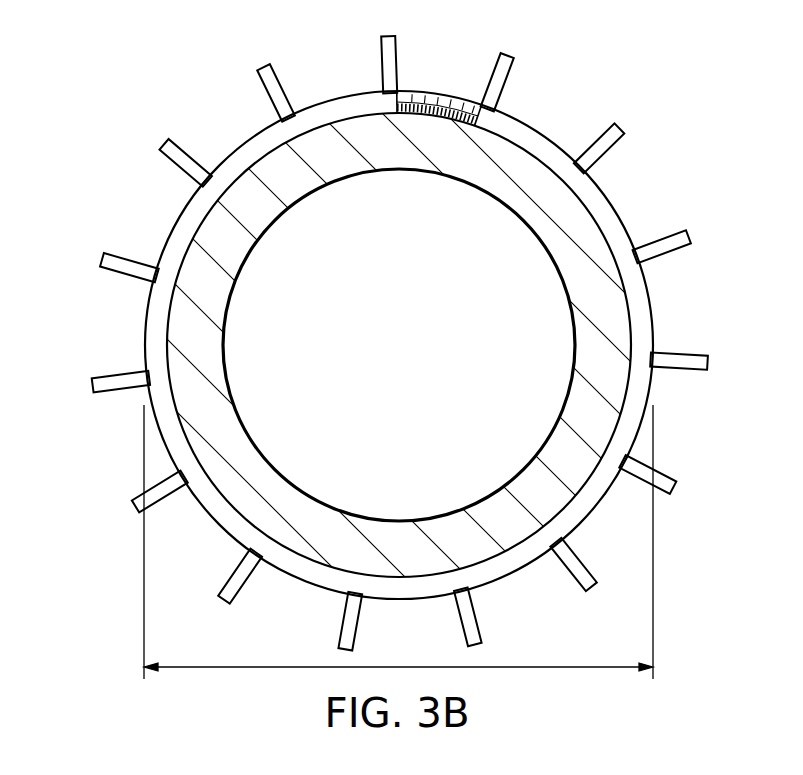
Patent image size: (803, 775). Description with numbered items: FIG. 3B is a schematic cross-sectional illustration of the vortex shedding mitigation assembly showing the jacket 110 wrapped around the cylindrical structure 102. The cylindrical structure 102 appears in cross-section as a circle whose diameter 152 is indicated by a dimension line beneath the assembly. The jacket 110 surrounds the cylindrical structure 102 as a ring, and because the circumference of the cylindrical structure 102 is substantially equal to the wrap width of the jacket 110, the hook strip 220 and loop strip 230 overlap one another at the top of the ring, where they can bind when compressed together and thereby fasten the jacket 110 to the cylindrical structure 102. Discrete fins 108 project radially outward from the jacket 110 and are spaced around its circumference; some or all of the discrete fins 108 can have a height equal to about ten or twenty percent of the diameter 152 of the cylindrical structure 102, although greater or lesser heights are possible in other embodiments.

The cylindrical structure 102 is at (573, 223).
The discrete fins 108 is at (265, 63).
The jacket 110 is at (655, 308).
The diameter 152 is at (400, 665).
The hook strip 220 is at (450, 103).
The loop strip 230 is at (430, 112).